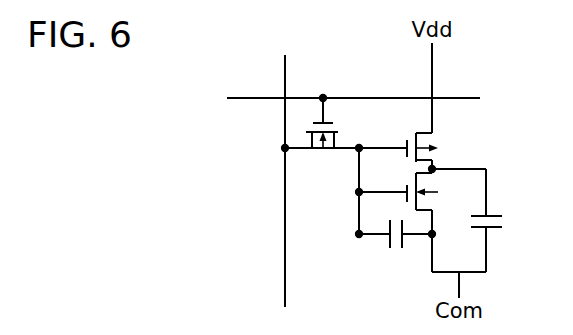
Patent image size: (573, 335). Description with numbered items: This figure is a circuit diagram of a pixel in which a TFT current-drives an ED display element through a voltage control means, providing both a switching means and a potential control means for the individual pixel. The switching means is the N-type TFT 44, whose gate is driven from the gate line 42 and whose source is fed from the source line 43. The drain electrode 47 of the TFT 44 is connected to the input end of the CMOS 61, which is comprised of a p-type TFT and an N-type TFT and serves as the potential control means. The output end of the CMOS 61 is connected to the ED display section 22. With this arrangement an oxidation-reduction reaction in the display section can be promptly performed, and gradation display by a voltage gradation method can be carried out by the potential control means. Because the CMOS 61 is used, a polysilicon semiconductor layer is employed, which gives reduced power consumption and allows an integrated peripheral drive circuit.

The gate line 42 is at (338, 99).
The source line 43 is at (285, 170).
The N-type TFT 44 is at (321, 139).
The drain electrode 47 is at (347, 146).
The CMOS 61 is at (447, 160).
The ED display section 22 is at (505, 224).